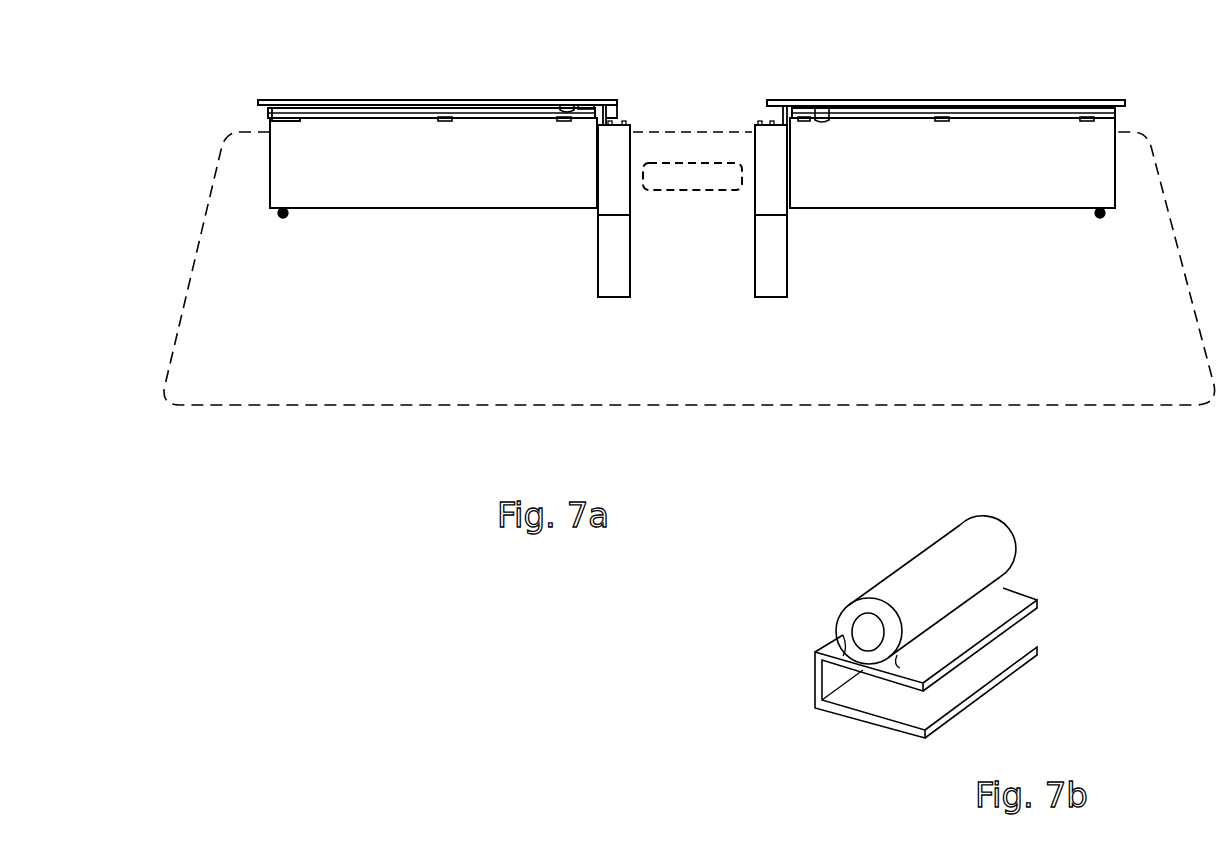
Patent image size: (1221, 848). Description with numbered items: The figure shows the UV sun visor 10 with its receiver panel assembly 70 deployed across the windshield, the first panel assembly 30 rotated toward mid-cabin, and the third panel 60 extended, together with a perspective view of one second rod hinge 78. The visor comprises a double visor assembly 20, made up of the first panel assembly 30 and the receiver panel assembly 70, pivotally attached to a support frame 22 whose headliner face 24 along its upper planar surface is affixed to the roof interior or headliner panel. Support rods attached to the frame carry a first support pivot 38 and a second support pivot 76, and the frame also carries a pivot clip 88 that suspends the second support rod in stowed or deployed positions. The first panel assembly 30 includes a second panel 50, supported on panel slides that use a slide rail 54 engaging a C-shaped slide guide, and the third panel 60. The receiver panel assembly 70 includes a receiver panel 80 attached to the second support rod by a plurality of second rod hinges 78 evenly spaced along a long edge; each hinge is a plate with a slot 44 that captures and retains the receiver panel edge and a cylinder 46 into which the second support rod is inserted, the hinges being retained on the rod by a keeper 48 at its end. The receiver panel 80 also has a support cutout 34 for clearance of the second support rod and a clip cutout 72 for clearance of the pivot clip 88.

In FIG. 7A, the UV sun visor 10 is at (215, 435).
In FIG. 7A, the double visor assembly 20 is at (621, 141).
In FIG. 7A, the support frame 22 is at (592, 106).
In FIG. 7A, the headliner face 24 is at (372, 100).
In FIG. 7A, the first panel assembly 30 is at (639, 232).
In FIG. 7A, the support cutout 34 is at (270, 119).
In FIG. 7A, the first support pivot 38 is at (606, 110).
In FIG. 7B, the slot 44 is at (872, 690).
In FIG. 7B, the cylinder 46 is at (862, 612).
In FIG. 7A, the keeper 48 is at (631, 124).
In FIG. 7A, the second panel 50 is at (624, 187).
In FIG. 7A, the slide rail 54 is at (598, 209).
In FIG. 7A, the third panel 60 is at (624, 265).
In FIG. 7A, the receiver panel assembly 70 is at (608, 240).
In FIG. 7A, the clip cutout 72 is at (572, 110).
In FIG. 7A, the second support pivot 76 is at (272, 114).
In FIG. 7A, the second rod hinge 78 is at (433, 96).
In FIG. 7B, the second rod hinge 78 is at (965, 632).
In FIG. 7A, the receiver panel 80 is at (373, 208).
In FIG. 7A, the pivot clip 88 is at (563, 104).